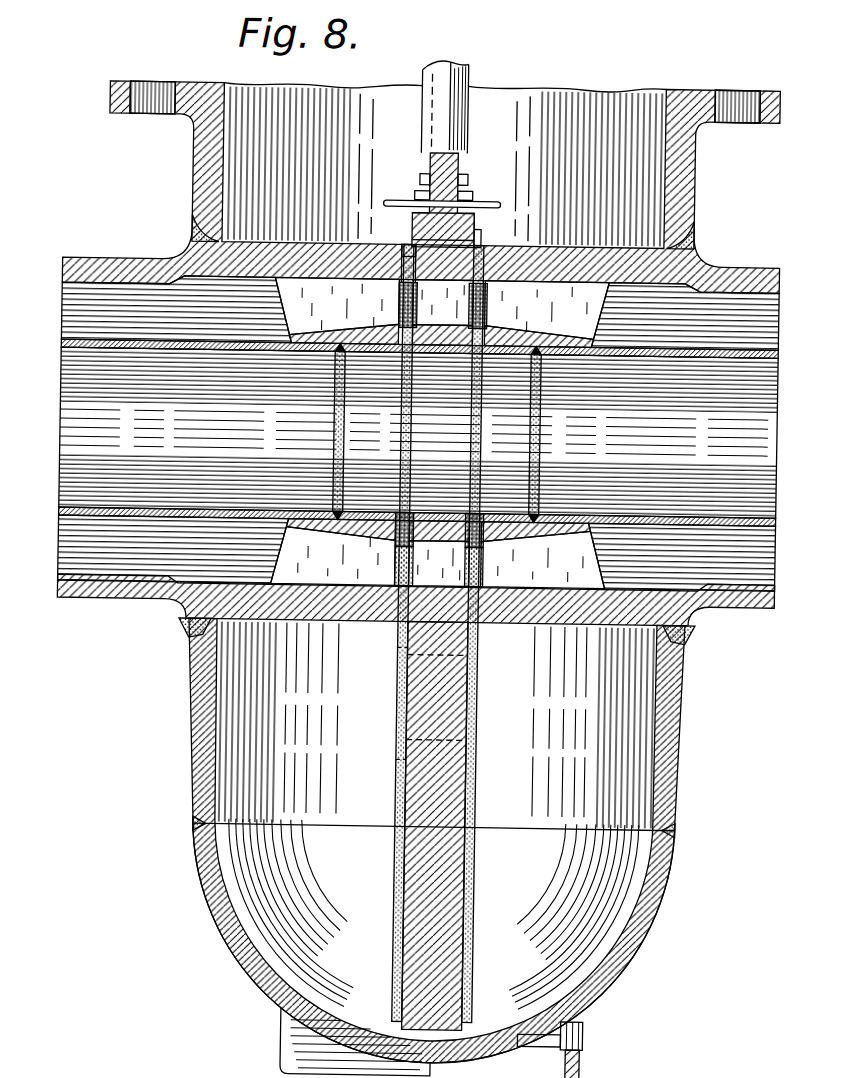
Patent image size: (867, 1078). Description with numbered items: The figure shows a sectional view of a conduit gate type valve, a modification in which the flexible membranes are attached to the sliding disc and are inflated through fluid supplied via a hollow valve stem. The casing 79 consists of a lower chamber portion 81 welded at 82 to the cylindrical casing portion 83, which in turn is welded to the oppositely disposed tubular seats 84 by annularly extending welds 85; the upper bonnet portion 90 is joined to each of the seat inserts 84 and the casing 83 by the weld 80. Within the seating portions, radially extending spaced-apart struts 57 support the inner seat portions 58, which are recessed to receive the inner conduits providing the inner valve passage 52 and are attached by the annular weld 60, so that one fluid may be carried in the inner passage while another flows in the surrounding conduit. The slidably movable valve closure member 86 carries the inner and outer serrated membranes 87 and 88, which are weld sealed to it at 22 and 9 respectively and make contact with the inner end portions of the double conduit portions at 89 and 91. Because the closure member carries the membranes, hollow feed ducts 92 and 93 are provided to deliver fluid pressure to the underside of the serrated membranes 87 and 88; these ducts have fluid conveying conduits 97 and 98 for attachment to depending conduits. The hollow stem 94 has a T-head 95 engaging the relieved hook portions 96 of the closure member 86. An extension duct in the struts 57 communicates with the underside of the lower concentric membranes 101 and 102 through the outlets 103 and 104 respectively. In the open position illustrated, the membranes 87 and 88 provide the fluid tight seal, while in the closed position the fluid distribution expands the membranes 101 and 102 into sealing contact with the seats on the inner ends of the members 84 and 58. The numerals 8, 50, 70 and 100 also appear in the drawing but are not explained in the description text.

The washer 8 is at (397, 313).
The weld seal 9 is at (397, 293).
The weld seal 22 is at (402, 244).
The hub 50 is at (455, 436).
The inner valve passage 52 is at (187, 346).
The struts 57 is at (285, 316).
The inner seat portions 58 is at (310, 332).
The annular weld 60 is at (336, 429).
The sleeve 70 is at (433, 305).
The casing 79 is at (229, 961).
The weld 80 is at (186, 229).
The lower chamber portion 81 is at (209, 884).
The weld 82 is at (199, 832).
The casing portion 83 is at (192, 737).
The tubular seats 84 is at (121, 609).
The annular welds 85 is at (187, 641).
The valve closure member 86 is at (478, 233).
The inner serrated membrane 87 is at (399, 359).
The outer serrated membrane 88 is at (397, 248).
The inner end portion 89 is at (480, 244).
The upper bonnet portion 90 is at (189, 169).
The inner end portion 91 is at (478, 491).
The hollow feed duct 92 is at (451, 126).
The hollow feed duct 93 is at (421, 119).
The hollow stem 94 is at (457, 153).
The T-head 95 is at (476, 223).
The relieved hook portions 96 is at (466, 196).
The fluid conveying conduit 97 is at (474, 201).
The fluid conveying conduit 98 is at (384, 202).
The spacer 100 is at (441, 310).
The lower concentric membrane 101 is at (481, 661).
The lower concentric membrane 102 is at (481, 734).
The outlet 103 is at (401, 651).
The outlet 104 is at (401, 761).